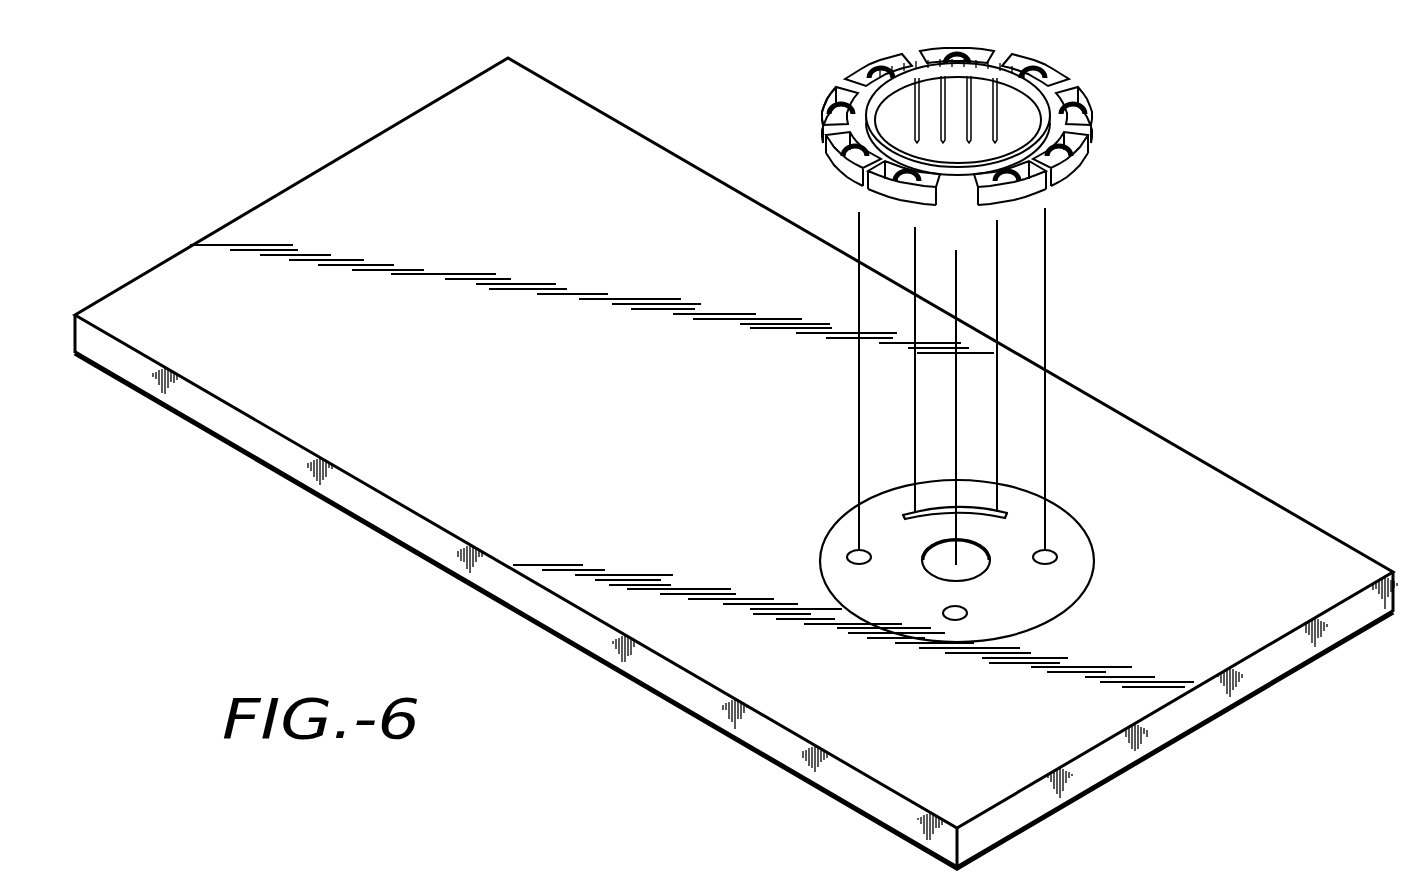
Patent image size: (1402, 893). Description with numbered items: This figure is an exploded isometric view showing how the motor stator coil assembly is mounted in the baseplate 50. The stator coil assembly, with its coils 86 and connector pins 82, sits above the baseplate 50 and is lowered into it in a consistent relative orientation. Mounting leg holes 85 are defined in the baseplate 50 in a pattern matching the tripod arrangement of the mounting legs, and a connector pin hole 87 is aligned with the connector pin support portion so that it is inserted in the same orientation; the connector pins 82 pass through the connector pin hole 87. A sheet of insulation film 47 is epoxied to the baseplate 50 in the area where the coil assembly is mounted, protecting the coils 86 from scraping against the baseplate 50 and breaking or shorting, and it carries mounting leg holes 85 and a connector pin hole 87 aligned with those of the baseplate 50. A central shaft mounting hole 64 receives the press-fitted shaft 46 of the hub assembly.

The shaft 46 is at (1097, 165).
The insulation film 47 is at (1063, 595).
The baseplate 50 is at (1216, 571).
The shaft mounting hole 64 is at (940, 567).
The connector pins 82 is at (855, 172).
The mounting leg holes 85 is at (967, 615).
The coils 86 is at (840, 99).
The connector pin hole 87 is at (1007, 517).